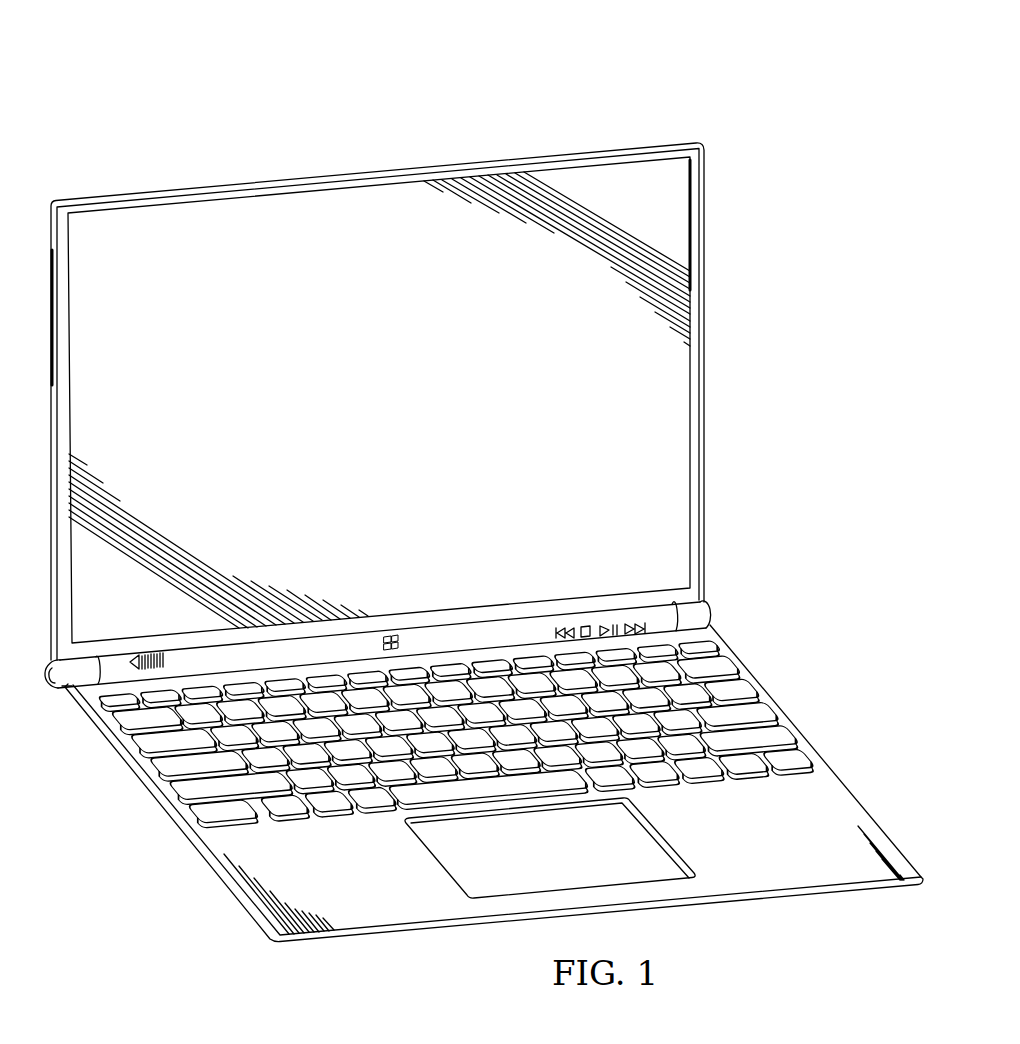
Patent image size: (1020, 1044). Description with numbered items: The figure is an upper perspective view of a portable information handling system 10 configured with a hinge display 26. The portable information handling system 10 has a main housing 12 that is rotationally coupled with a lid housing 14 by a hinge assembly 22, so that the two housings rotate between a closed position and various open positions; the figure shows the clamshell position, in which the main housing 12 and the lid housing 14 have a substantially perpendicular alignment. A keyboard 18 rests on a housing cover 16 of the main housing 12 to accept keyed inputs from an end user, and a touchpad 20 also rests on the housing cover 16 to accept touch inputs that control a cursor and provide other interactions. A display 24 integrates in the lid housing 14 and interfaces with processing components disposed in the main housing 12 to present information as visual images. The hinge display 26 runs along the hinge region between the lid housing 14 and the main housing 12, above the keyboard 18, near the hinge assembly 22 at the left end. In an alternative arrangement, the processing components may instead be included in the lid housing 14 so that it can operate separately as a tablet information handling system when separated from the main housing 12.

The portable information handling system 10 is at (190, 131).
The main housing 12 is at (852, 893).
The lid housing 14 is at (378, 171).
The housing cover 16 is at (840, 793).
The keyboard 18 is at (745, 690).
The touchpad 20 is at (697, 862).
The hinge assembly 22 is at (85, 673).
The display 24 is at (367, 416).
The hinge display 26 is at (495, 632).